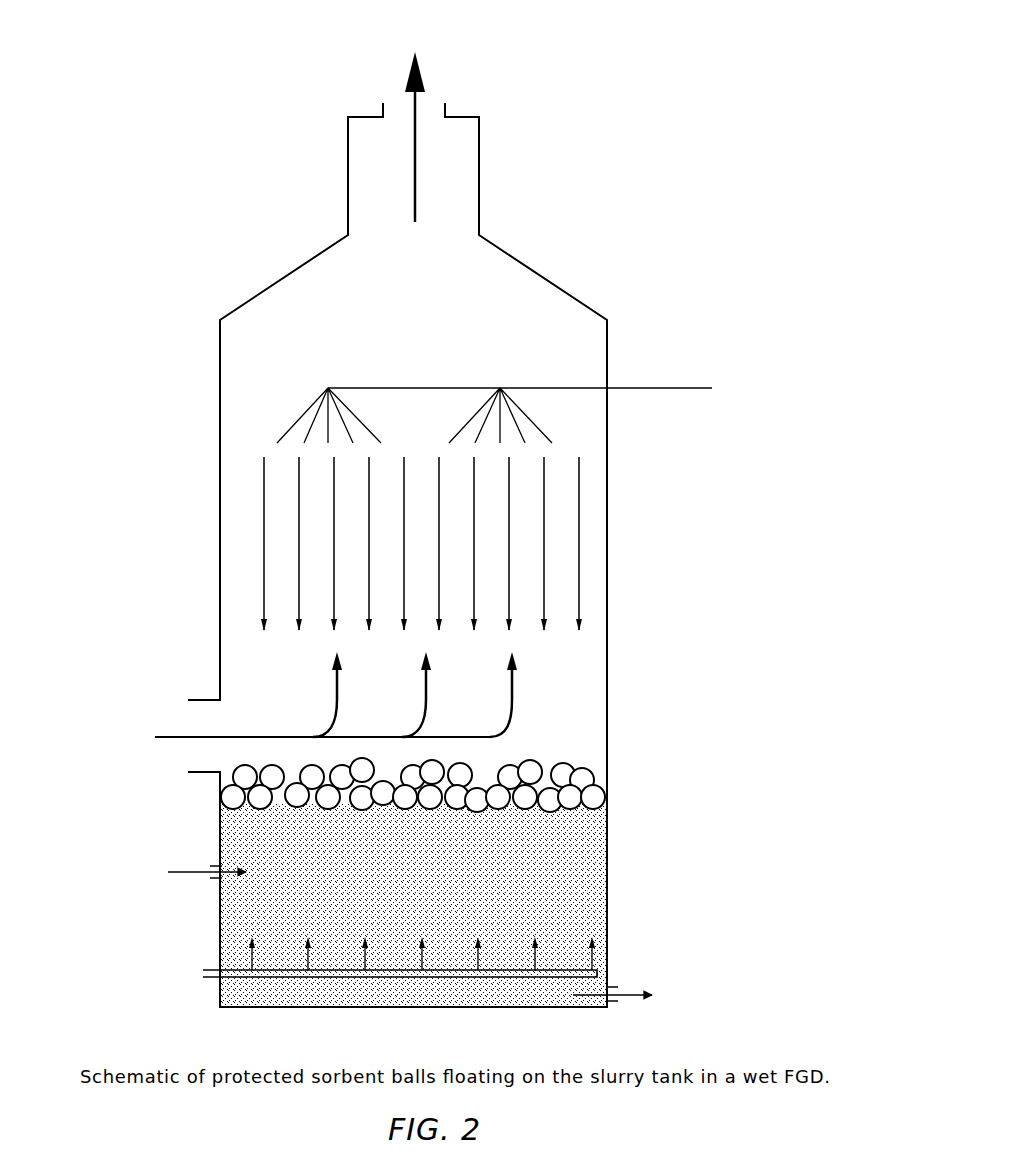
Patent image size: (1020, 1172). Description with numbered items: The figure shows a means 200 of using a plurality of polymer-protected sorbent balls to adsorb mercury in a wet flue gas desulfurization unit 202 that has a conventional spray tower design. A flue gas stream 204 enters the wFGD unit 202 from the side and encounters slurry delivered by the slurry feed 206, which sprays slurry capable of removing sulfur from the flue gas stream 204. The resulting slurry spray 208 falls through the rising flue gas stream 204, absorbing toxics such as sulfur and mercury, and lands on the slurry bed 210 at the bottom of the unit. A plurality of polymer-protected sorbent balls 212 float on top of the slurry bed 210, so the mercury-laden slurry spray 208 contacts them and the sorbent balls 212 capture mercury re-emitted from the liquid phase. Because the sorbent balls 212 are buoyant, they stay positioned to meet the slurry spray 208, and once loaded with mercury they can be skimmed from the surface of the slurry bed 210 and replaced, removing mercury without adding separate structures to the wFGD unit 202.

The means of utilizing a plurality of polymer-protected sorbent balls 200 is at (630, 60).
The wet flue gas desulfurization unit 202 is at (540, 275).
The flue gas stream 204 is at (180, 736).
The slurry feed 206 is at (543, 430).
The slurry spray 208 is at (582, 537).
The slurry bed 210 is at (590, 845).
The polymer-protected sorbent balls 212 is at (588, 768).